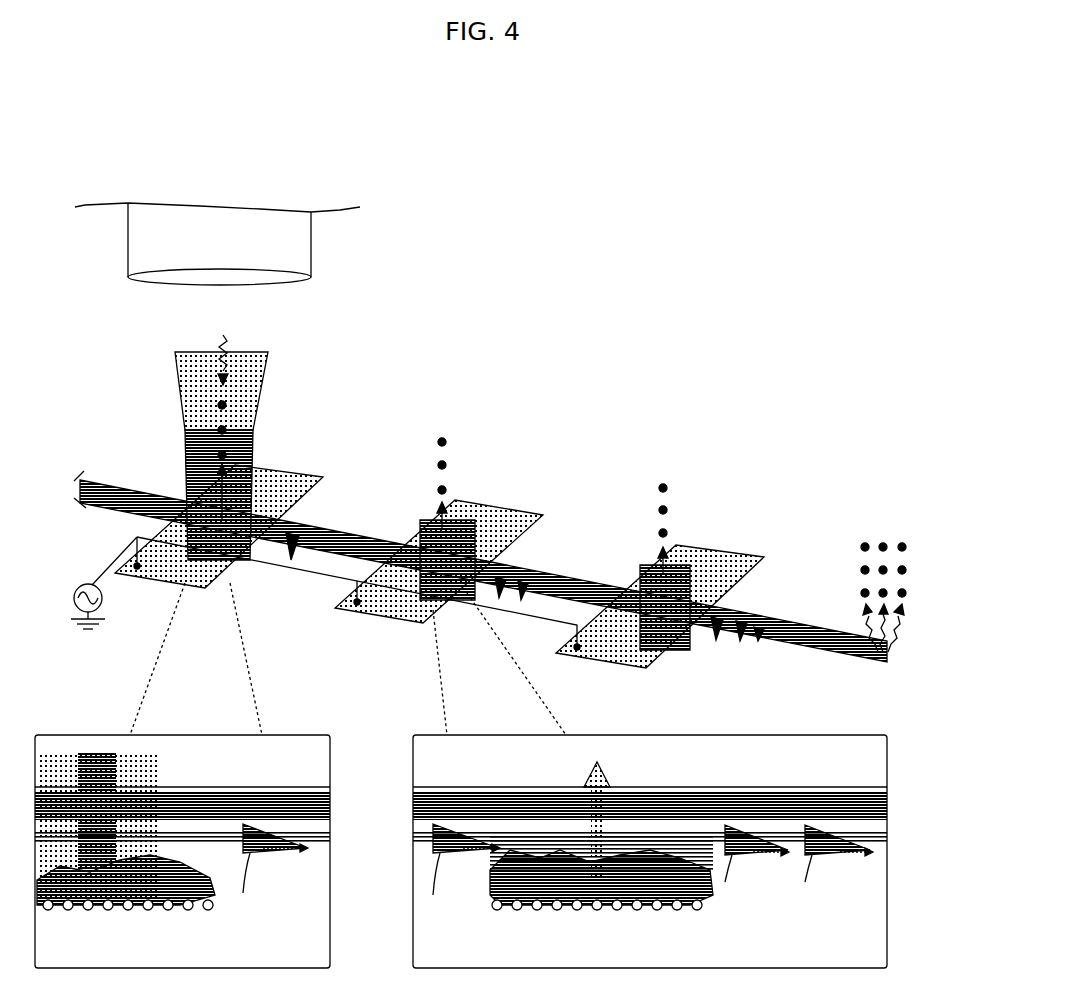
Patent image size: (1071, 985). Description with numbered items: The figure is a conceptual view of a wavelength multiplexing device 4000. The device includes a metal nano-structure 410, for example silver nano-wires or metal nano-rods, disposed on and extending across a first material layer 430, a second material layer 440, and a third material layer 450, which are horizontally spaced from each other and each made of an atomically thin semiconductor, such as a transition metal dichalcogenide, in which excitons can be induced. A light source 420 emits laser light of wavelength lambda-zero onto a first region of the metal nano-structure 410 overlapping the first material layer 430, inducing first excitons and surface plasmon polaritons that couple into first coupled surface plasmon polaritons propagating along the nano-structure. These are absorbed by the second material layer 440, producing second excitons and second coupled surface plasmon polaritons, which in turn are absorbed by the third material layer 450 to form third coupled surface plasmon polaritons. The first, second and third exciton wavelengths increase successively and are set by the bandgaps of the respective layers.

The wavelength multiplexing device 4000 is at (527, 149).
The light source 420 is at (298, 242).
The metal nano-structure 410 is at (345, 536).
The first material layer 430 is at (287, 466).
The second material layer 440 is at (510, 508).
The third material layer 450 is at (740, 557).